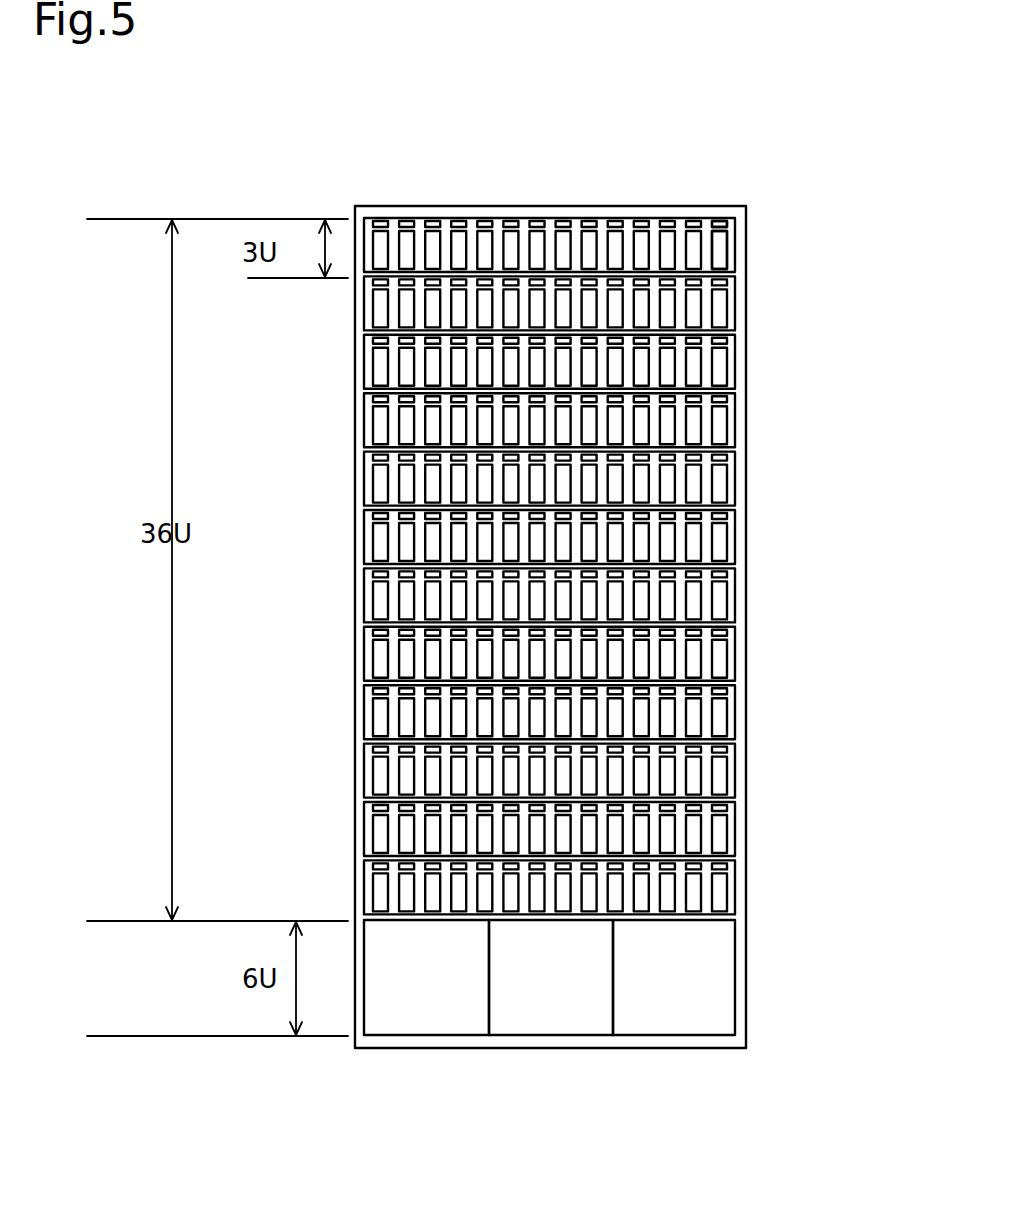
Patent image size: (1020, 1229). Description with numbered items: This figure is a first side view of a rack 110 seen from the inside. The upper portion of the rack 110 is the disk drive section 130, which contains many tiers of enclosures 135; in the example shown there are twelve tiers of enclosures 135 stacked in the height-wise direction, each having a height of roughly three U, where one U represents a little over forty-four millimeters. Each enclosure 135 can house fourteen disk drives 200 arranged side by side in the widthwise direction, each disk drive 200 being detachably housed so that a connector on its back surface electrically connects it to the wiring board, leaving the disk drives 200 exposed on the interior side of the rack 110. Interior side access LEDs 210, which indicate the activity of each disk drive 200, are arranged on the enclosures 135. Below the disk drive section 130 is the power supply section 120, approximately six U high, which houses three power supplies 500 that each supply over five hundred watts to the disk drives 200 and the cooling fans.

The rack 110 is at (420, 173).
The disk drive section 130 is at (843, 242).
The enclosure 135 is at (738, 250).
The disk drive 200 is at (722, 246).
The interior side access LED 210 is at (720, 222).
The power supply section 120 is at (742, 997).
The power supply 500 is at (425, 1020).